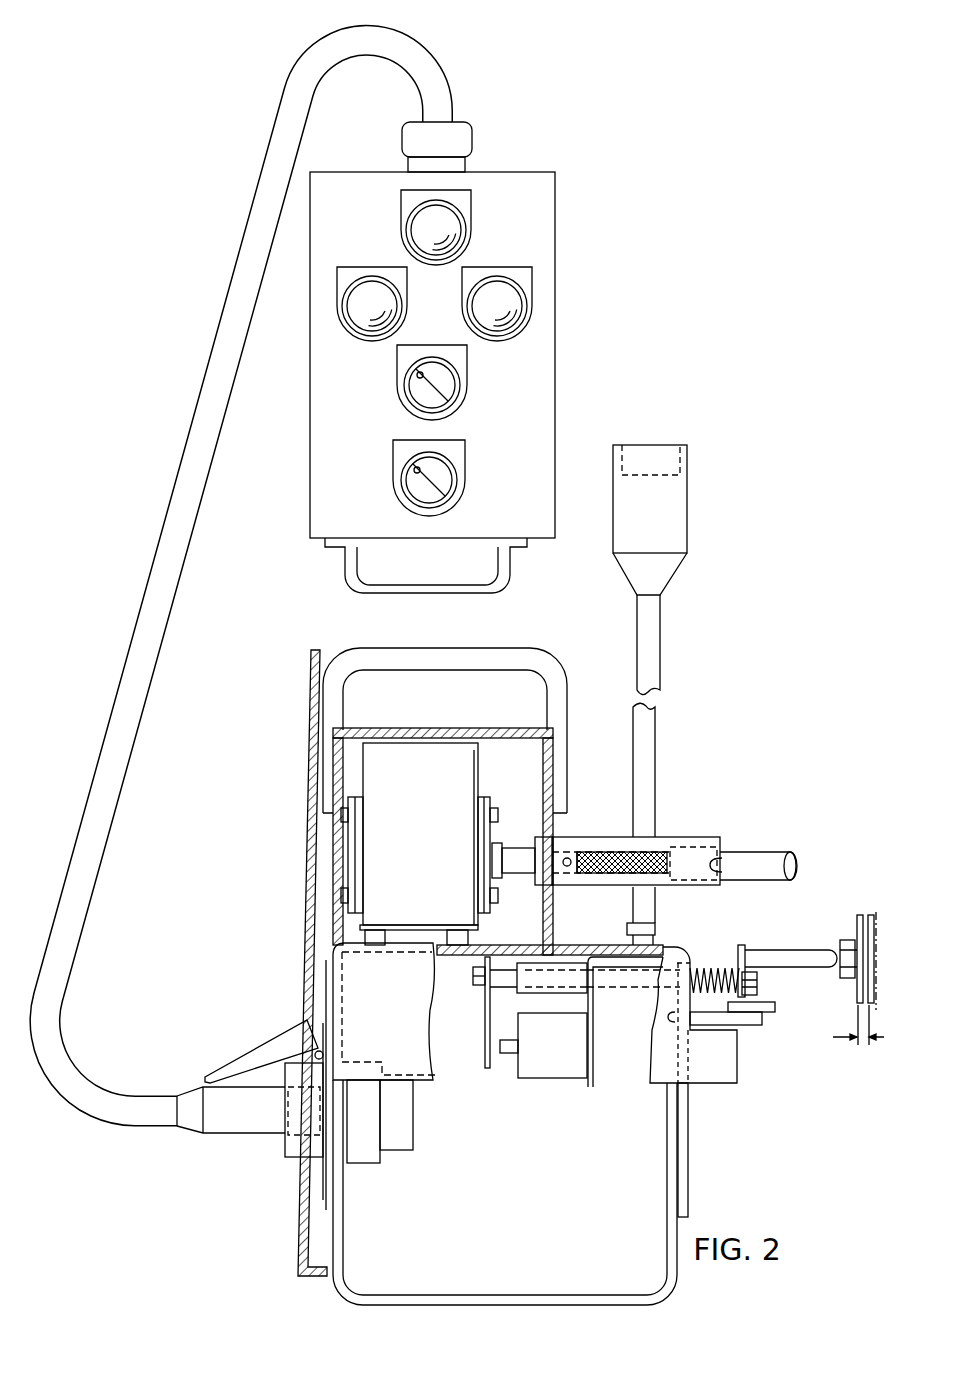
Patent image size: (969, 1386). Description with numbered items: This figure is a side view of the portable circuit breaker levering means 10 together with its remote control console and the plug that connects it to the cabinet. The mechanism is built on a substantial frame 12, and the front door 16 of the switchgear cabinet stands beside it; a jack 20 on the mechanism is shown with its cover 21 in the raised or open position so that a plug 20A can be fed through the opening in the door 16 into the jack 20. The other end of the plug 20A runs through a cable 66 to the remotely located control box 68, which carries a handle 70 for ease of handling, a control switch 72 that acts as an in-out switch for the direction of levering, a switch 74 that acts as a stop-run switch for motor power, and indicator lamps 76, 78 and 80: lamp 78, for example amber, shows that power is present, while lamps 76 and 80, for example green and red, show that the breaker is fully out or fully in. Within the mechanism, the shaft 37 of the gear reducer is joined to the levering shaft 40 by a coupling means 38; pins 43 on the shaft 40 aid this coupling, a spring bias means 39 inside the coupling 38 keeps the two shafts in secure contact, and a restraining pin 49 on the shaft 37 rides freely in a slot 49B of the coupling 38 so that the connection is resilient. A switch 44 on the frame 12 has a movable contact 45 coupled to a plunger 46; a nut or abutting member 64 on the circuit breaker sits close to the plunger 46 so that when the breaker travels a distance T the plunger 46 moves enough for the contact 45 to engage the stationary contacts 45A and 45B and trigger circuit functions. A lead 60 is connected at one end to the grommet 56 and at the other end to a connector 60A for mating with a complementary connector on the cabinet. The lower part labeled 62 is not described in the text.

The portable circuit breaker levering means 10 is at (568, 671).
The frame 12 is at (726, 1084).
The front door 16 is at (309, 750).
The jack 20 is at (293, 1160).
The plug 20A is at (225, 1134).
The cover 21 is at (282, 1030).
The shaft 37 is at (514, 848).
The coupling means 38 is at (672, 837).
The spring bias means 39 is at (602, 845).
The levering shaft 40 is at (777, 852).
The pins 43 is at (722, 858).
The switch 44 is at (571, 1078).
The movable contact 45 is at (726, 872).
The stationary contact 45A is at (527, 1031).
The stationary contact 45B is at (574, 1046).
The plunger 46 is at (786, 950).
The restraining pin 49 is at (578, 873).
The slot 49B is at (606, 877).
The grommet 56 is at (655, 936).
The lead 60 is at (660, 626).
The connector 60A is at (687, 546).
The lower housing 62 is at (588, 1292).
The abutting member 64 is at (843, 940).
The cable 66 is at (140, 702).
The control box 68 is at (536, 172).
The handle 70 is at (478, 594).
The control switch 72 is at (468, 392).
The switch 74 is at (466, 468).
The lamp 76 is at (337, 280).
The lamp 78 is at (472, 238).
The lamp 80 is at (533, 282).
The distance T is at (857, 1042).